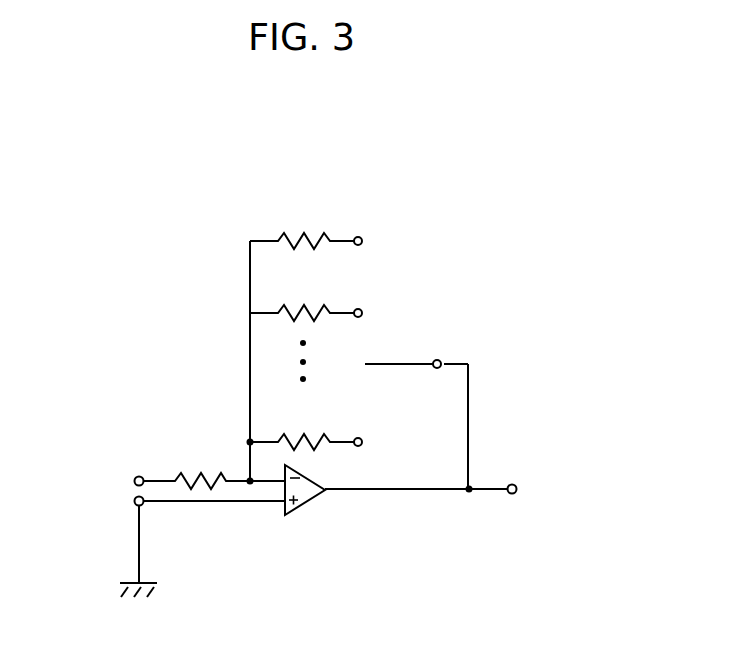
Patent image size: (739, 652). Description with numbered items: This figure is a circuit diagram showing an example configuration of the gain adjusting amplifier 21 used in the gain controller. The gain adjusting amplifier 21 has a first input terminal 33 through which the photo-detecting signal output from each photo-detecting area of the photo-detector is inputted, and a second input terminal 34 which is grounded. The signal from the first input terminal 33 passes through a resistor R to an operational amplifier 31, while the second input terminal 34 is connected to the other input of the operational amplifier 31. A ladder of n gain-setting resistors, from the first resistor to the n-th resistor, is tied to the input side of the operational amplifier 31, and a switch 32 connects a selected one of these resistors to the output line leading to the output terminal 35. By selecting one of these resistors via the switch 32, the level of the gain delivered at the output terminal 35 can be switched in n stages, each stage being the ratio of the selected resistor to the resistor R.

The gain adjusting amplifier 21 is at (335, 367).
The operational amplifier 31 is at (305, 495).
The switch 32 is at (412, 362).
The first input terminal 33 is at (139, 476).
The second input terminal 34 is at (144, 505).
The output terminal 35 is at (512, 484).